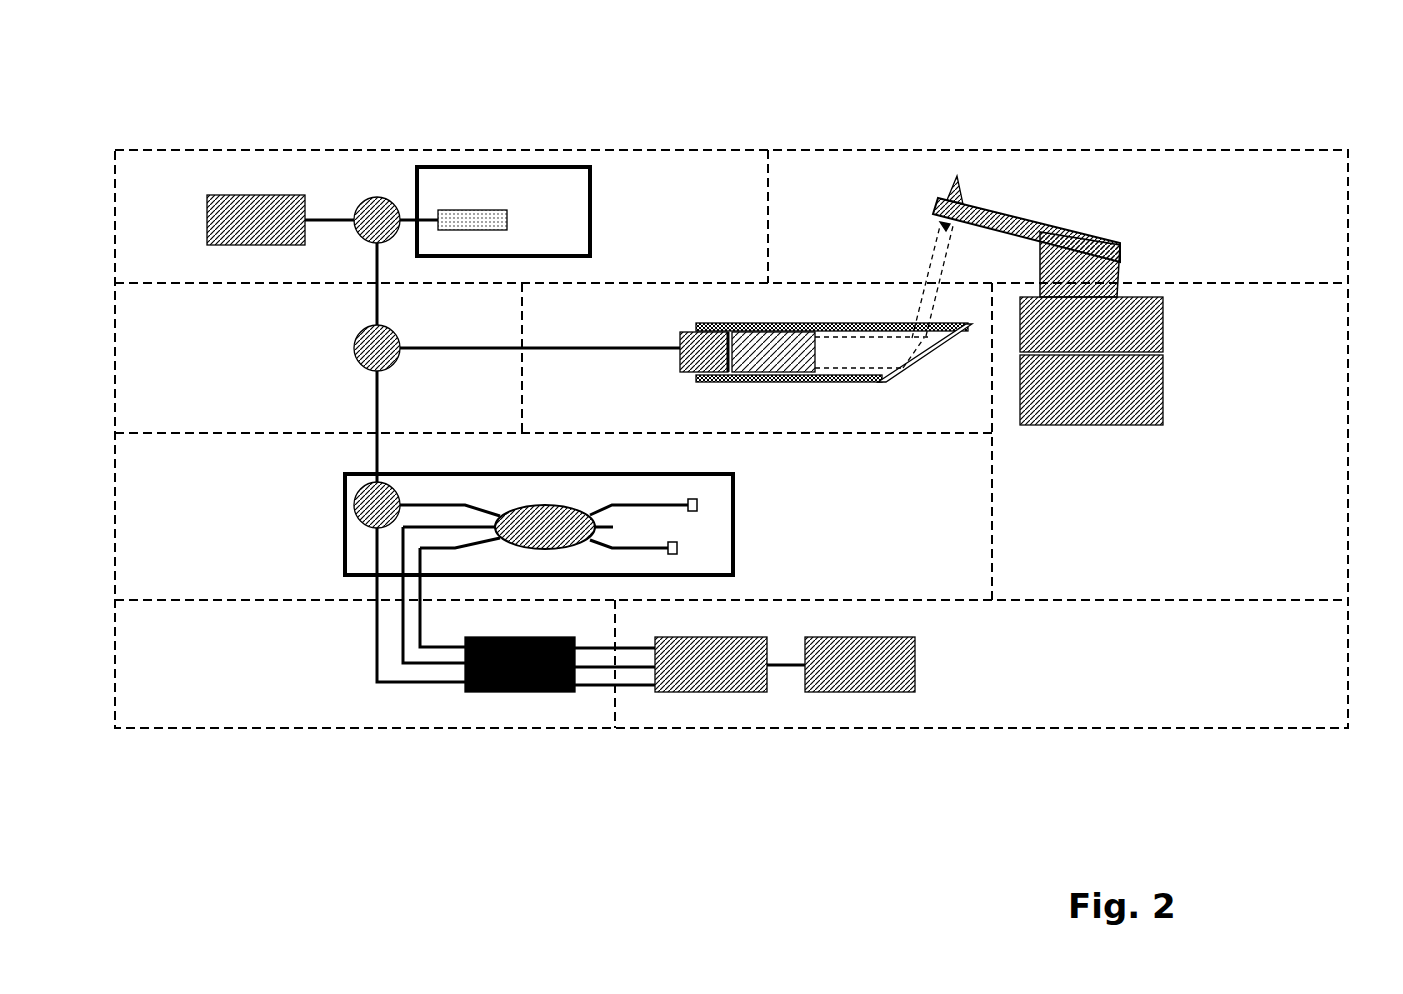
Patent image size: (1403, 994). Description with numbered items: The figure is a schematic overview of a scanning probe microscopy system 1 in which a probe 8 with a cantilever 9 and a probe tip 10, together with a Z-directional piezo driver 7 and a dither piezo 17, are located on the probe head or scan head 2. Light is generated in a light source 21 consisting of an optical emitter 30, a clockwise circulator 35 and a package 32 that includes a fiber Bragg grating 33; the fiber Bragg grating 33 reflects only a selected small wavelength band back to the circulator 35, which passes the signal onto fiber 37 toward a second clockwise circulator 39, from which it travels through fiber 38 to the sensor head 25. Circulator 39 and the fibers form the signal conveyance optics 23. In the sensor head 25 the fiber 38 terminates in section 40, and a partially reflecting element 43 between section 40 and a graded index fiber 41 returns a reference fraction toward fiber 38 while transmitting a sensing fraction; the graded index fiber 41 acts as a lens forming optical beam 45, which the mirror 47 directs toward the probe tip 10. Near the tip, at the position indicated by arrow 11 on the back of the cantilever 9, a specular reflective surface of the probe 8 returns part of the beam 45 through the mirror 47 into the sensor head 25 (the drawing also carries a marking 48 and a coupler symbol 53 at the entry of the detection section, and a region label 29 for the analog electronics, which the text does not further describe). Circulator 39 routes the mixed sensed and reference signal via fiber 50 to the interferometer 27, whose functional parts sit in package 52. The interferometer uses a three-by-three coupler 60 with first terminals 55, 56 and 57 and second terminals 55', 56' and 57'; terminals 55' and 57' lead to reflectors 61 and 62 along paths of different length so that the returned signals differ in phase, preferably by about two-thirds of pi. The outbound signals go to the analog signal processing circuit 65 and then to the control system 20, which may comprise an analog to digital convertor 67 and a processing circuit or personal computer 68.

The system 1 is at (95, 102).
The probe head 2 is at (1325, 538).
The Z-directional piezo type driver 7 is at (1138, 425).
The probe 8 is at (1070, 238).
The cantilever 9 is at (1003, 218).
The probe tip 10 is at (955, 178).
The arrow 11 is at (940, 228).
The dither piezo 17 is at (1163, 305).
The control system 20 is at (1088, 710).
The light source 21 is at (335, 160).
The signal conveyance optics 23 is at (135, 357).
The sensor head 25 is at (690, 302).
The interferometer 27 is at (125, 540).
The analog electronics 29 is at (268, 718).
The optical emitter 30 is at (268, 193).
The package 32 is at (597, 192).
The fiber Bragg grating 33 is at (448, 210).
The circulator 35 is at (378, 197).
The fiber 37 is at (375, 305).
The fiber 38 is at (458, 362).
The clockwise circulator 39 is at (352, 365).
The section 40 is at (690, 368).
The graded index fiber 41 is at (752, 378).
The partially reflecting element 43 is at (708, 378).
The optical beam 45 is at (860, 345).
The reflective element 47 is at (915, 355).
The sensor head housing 48 is at (925, 320).
The fiber 50 is at (375, 412).
The package 52 is at (343, 480).
The third coupler 53 is at (358, 520).
The first terminal 55 is at (450, 476).
The second terminal 55' is at (671, 478).
The first terminal 56 is at (458, 553).
The second terminal 56' is at (637, 526).
The first terminal 57 is at (460, 592).
The second terminal 57' is at (648, 573).
The 3×3 coupler 60 is at (582, 510).
The reflector 61 is at (700, 505).
The reflector 62 is at (680, 547).
The analog signal processing circuit 65 is at (512, 695).
The analog to digital convertor 67 is at (718, 695).
The processing circuit 68 is at (855, 695).